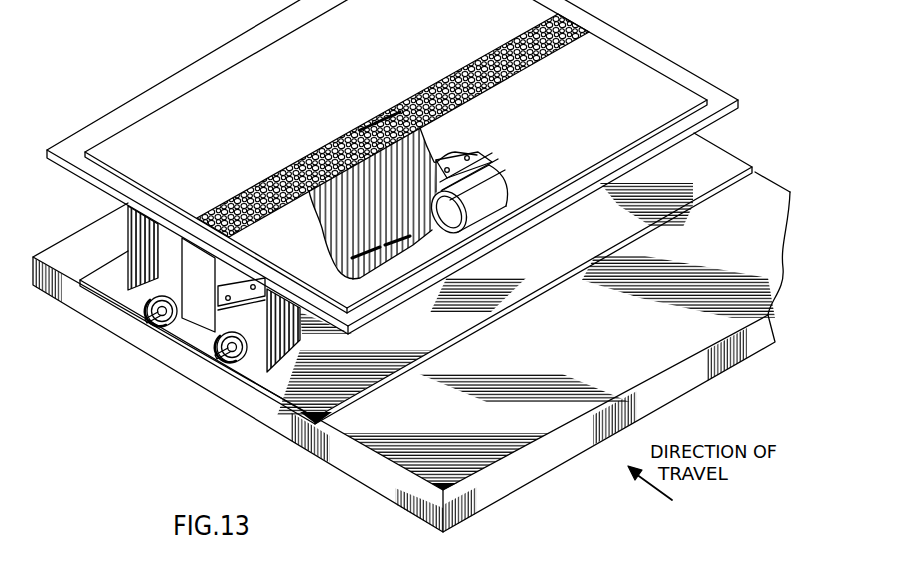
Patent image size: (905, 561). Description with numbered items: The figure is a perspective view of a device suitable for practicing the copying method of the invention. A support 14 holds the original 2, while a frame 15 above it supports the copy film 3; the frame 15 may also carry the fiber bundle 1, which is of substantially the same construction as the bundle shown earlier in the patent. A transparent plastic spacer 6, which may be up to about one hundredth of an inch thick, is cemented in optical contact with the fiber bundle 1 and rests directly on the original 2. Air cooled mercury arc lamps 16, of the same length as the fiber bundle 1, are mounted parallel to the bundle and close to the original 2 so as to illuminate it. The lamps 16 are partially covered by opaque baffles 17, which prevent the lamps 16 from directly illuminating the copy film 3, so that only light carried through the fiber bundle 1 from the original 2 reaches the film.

The fiber bundle 1 is at (383, 113).
The original 2 is at (705, 155).
The copy film 3 is at (553, 110).
The transparent plastic spacer 6 is at (192, 353).
The support 14 is at (417, 470).
The frame 15 is at (190, 77).
The air cooled mercury arc lamps 16 is at (147, 326).
The opaque baffles 17 is at (146, 313).